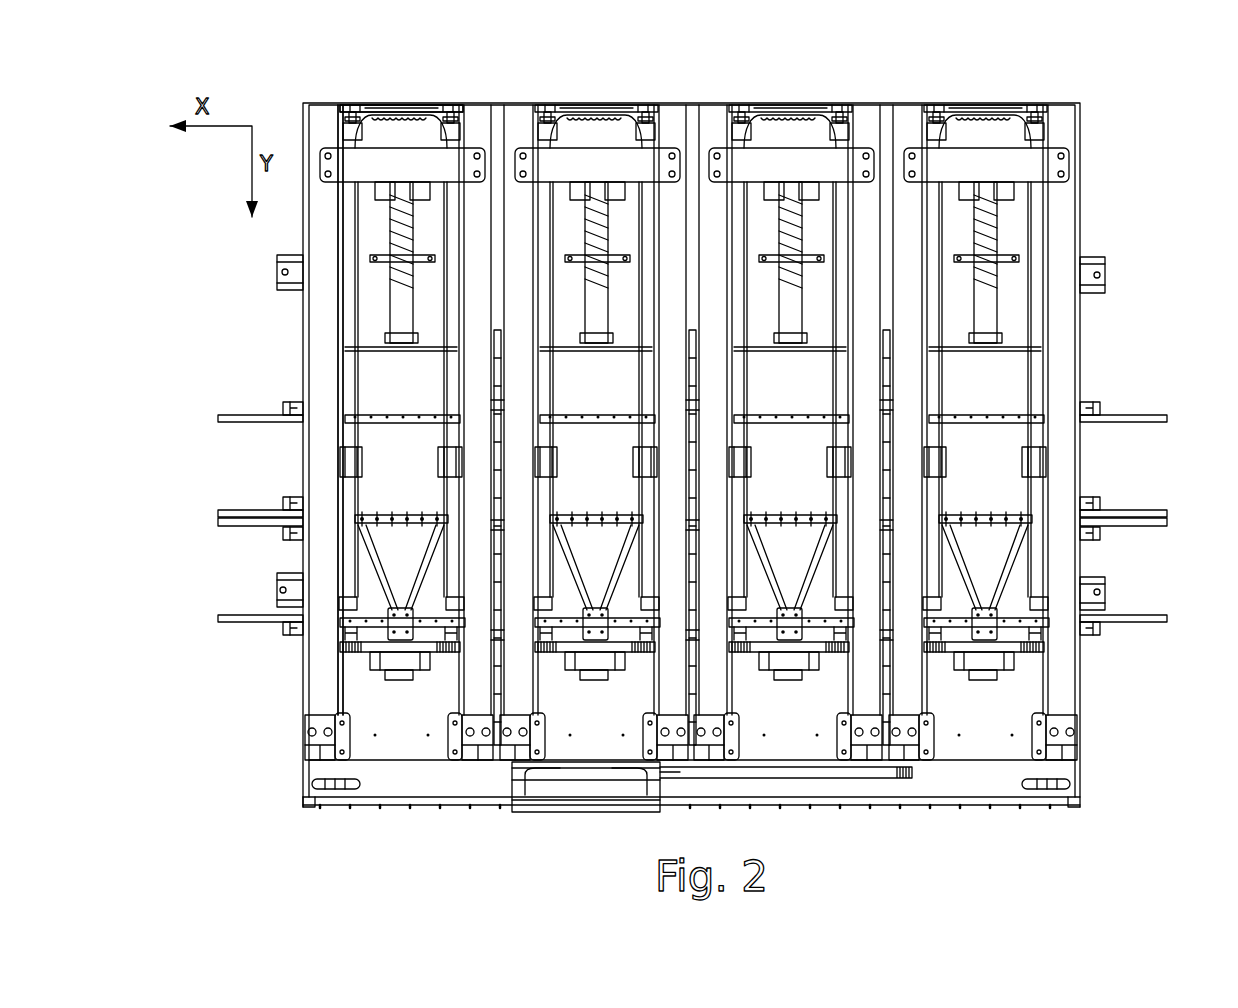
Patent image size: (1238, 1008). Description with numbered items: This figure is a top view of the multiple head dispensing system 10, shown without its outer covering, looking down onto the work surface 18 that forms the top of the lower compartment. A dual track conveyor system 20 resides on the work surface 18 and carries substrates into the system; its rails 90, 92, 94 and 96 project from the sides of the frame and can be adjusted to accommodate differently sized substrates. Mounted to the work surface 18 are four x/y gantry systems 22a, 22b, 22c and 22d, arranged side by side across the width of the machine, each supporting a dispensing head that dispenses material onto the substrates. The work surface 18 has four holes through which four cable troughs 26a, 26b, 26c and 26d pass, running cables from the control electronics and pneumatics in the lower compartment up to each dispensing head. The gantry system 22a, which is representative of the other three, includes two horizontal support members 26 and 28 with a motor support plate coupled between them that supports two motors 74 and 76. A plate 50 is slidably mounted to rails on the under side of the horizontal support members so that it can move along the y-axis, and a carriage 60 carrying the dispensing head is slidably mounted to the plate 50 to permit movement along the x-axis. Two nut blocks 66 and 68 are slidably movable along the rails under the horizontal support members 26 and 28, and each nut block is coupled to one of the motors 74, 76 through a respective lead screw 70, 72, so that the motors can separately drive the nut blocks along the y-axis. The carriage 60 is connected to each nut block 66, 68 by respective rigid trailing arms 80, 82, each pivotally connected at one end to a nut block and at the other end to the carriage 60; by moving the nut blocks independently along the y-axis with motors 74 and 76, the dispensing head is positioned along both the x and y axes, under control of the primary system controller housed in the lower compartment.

The multiple head dispensing system 10 is at (1130, 112).
The work surface 18 is at (1033, 702).
The conveyor system 20 is at (1188, 415).
The x/y gantry system 22a is at (400, 118).
The x/y gantry system 22b is at (599, 407).
The x/y gantry system 22c is at (793, 407).
The x/y gantry system 22d is at (983, 407).
The horizontal support member 26 is at (325, 110).
The cable trough 26a is at (408, 268).
The cable trough 26b is at (613, 262).
The cable trough 26c is at (806, 262).
The cable trough 26d is at (1002, 262).
The horizontal support member 28 is at (480, 110).
The plate 50 is at (352, 662).
The carriage 60 is at (400, 672).
The nut block 66 is at (362, 472).
The nut block 68 is at (452, 461).
The lead screw 70 is at (355, 360).
The lead screw 72 is at (458, 413).
The motor 74 is at (385, 200).
The motor 76 is at (421, 200).
The rigid trailing arm 80 is at (358, 535).
The rigid trailing arm 82 is at (433, 556).
The rail 90 is at (222, 618).
The rail 92 is at (220, 522).
The rail 94 is at (220, 513).
The rail 96 is at (220, 421).